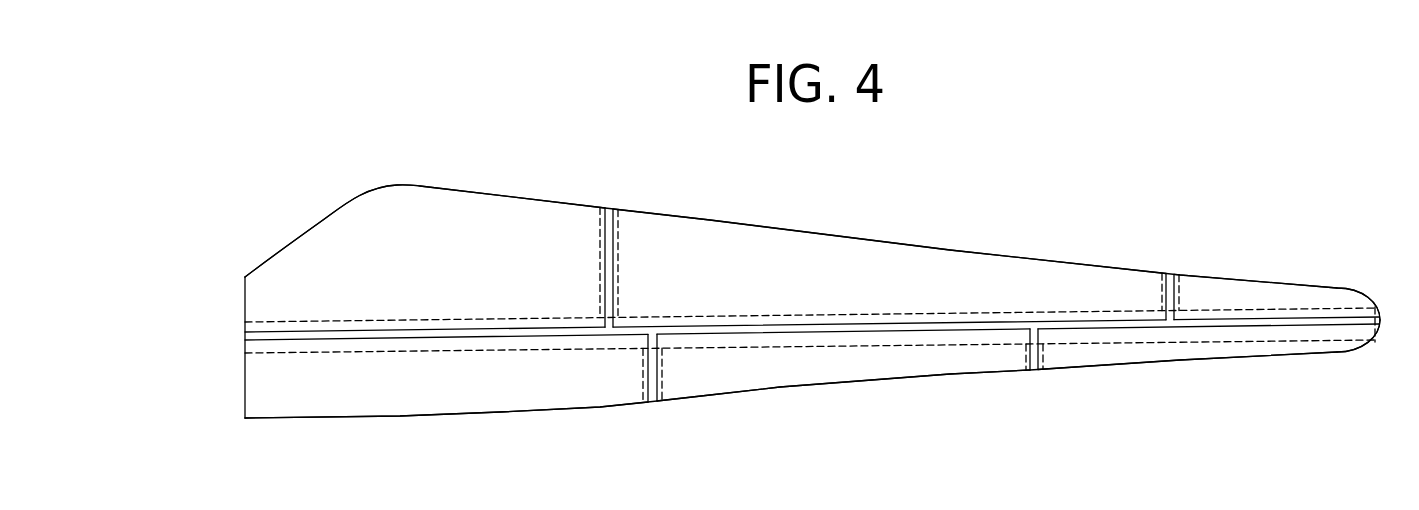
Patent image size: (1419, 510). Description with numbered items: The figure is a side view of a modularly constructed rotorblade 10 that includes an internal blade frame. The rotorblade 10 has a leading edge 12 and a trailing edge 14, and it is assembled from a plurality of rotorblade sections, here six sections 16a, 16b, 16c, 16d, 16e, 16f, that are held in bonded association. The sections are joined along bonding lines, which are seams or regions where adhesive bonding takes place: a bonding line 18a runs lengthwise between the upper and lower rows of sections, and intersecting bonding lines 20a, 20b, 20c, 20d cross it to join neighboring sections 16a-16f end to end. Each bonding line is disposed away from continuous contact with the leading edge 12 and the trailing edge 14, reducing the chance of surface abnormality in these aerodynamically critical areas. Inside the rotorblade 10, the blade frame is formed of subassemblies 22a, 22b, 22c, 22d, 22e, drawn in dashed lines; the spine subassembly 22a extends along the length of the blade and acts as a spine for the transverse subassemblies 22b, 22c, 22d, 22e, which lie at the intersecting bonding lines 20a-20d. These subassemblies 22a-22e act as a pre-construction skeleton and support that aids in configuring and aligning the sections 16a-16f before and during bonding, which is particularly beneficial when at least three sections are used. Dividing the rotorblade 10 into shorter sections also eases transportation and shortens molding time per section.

The modularly constructed rotorblade 10 is at (765, 310).
The leading edge 12 is at (733, 395).
The trailing edge 14 is at (814, 235).
The rotorblade section 16a is at (454, 275).
The rotorblade section 16b is at (454, 394).
The rotorblade section 16c is at (908, 293).
The rotorblade section 16d is at (836, 378).
The rotorblade section 16e is at (1267, 290).
The rotorblade section 16f is at (1252, 348).
The bonding line 18a is at (245, 337).
The intersecting bonding line 20a is at (618, 218).
The intersecting bonding line 20b is at (643, 380).
The intersecting bonding line 20c is at (1176, 268).
The intersecting bonding line 20d is at (1026, 353).
The spine subassembly 22a is at (309, 345).
The transverse subassembly 22b is at (598, 238).
The transverse subassembly 22c is at (661, 382).
The transverse subassembly 22d is at (1162, 287).
The transverse subassembly 22e is at (1044, 356).